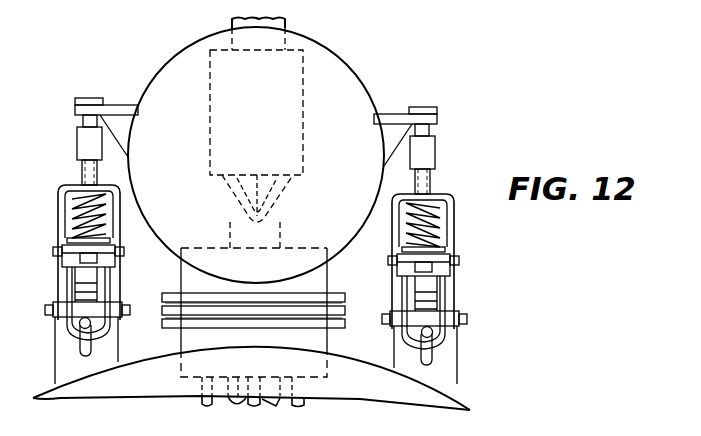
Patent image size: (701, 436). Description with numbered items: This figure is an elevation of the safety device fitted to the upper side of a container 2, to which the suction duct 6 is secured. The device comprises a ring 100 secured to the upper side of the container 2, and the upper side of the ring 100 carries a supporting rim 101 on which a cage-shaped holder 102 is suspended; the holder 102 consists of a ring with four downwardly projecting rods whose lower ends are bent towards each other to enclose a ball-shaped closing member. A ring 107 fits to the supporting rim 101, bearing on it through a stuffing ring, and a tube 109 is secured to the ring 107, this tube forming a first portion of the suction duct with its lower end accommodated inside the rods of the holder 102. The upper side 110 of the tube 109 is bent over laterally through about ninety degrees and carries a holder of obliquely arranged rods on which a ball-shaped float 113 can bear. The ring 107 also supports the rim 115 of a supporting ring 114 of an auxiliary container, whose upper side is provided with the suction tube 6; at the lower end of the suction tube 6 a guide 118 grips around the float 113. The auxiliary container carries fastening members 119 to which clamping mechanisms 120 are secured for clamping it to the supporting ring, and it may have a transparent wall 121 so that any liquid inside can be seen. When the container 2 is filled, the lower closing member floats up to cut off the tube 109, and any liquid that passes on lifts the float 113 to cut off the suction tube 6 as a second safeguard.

The container 2 is at (467, 405).
The suction duct 6 is at (286, 22).
The ring 100 is at (326, 342).
The supporting rim 101 is at (162, 323).
The cage-shaped holder 102 is at (196, 380).
The ring 107 is at (346, 309).
The tube 109 is at (271, 377).
The upper side of the tube 110 is at (272, 218).
The ball-shaped float 113 is at (259, 178).
The supporting ring 114 is at (327, 262).
The rim 115 is at (163, 295).
The guide 118 is at (210, 112).
The fastening members 119 is at (75, 107).
The clamping mechanisms 120 is at (58, 228).
The transparent wall 121 is at (173, 63).